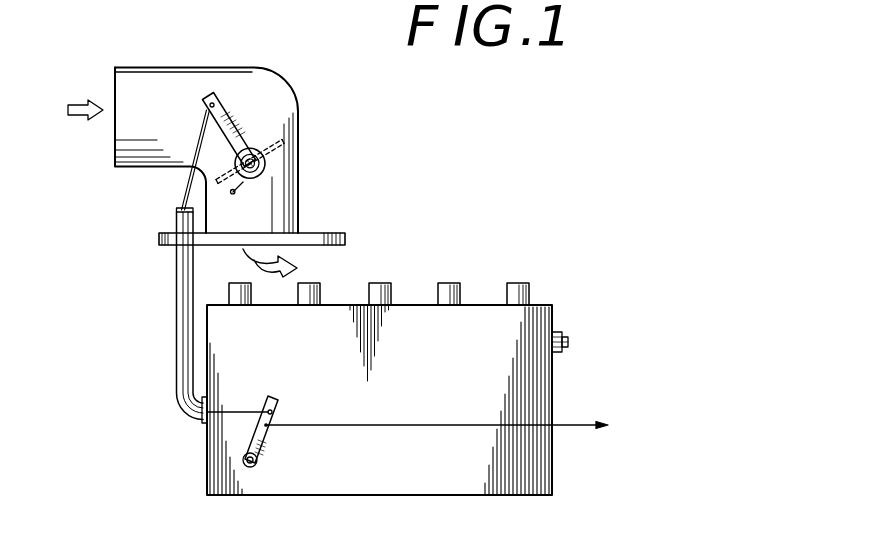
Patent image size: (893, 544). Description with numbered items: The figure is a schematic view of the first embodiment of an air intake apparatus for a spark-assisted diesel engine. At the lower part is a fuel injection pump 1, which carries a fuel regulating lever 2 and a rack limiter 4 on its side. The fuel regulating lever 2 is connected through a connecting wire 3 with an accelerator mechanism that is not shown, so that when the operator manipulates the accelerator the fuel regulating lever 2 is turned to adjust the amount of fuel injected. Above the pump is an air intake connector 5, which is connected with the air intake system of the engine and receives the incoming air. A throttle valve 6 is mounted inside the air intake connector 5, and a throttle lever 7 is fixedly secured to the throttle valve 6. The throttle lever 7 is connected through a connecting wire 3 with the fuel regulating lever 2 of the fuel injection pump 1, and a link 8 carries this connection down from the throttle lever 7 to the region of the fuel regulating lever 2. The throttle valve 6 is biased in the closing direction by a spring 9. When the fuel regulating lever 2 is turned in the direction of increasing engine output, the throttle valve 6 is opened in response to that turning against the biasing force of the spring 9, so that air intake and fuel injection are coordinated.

The fuel injection pump 1 is at (477, 490).
The fuel regulating lever 2 is at (258, 443).
The connecting wire 3 is at (398, 423).
The rack limiter 4 is at (557, 330).
The air intake connector 5 is at (160, 83).
The throttle valve 6 is at (285, 141).
The throttle lever 7 is at (230, 123).
The connecting rod 8 is at (182, 194).
The spring 9 is at (249, 178).